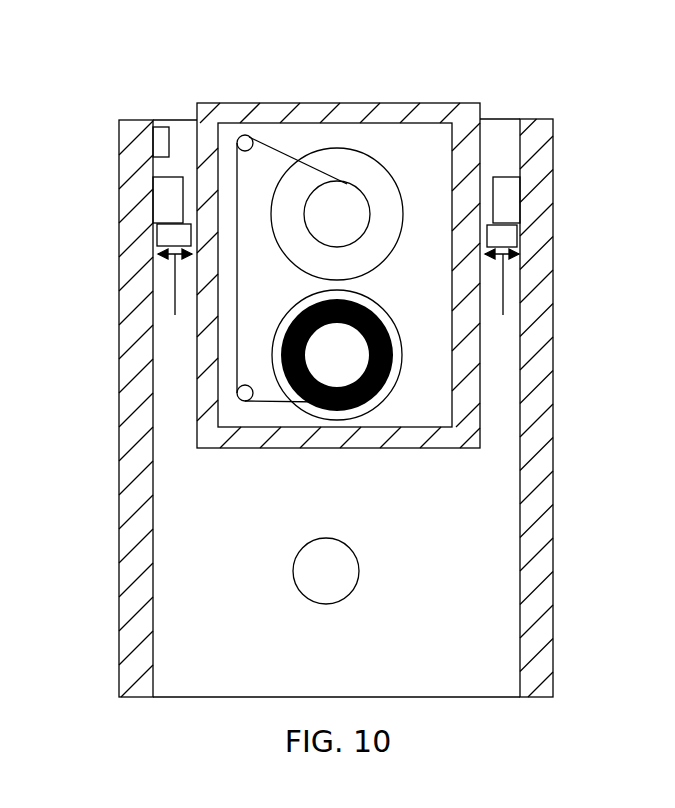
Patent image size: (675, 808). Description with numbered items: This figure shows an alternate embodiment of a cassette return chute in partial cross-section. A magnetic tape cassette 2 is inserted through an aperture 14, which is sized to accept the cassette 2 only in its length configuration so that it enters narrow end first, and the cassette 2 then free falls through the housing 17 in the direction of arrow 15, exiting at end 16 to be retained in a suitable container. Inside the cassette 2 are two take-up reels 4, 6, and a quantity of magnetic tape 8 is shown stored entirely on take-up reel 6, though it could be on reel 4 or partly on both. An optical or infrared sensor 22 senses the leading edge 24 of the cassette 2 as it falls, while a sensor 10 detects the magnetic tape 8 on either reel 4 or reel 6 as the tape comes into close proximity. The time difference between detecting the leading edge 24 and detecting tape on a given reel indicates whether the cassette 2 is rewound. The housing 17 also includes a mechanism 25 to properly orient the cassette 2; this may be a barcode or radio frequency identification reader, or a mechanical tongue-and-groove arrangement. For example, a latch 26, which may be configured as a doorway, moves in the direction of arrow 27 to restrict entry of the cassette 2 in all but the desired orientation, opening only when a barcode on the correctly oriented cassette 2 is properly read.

The magnetic tape cassette 2 is at (415, 102).
The take-up reel 4 is at (388, 176).
The take-up reel 6 is at (379, 304).
The magnetic tape 8 is at (392, 356).
The sensor 10 is at (360, 560).
The aperture 14 is at (183, 90).
The arrow 15 is at (327, 448).
The end 16 is at (311, 655).
The housing 17 is at (555, 158).
The optical or infrared sensor 22 is at (163, 143).
The leading edge 24 is at (244, 470).
The mechanism 25 is at (172, 202).
The latch 26 is at (177, 233).
The arrow 27 is at (175, 315).